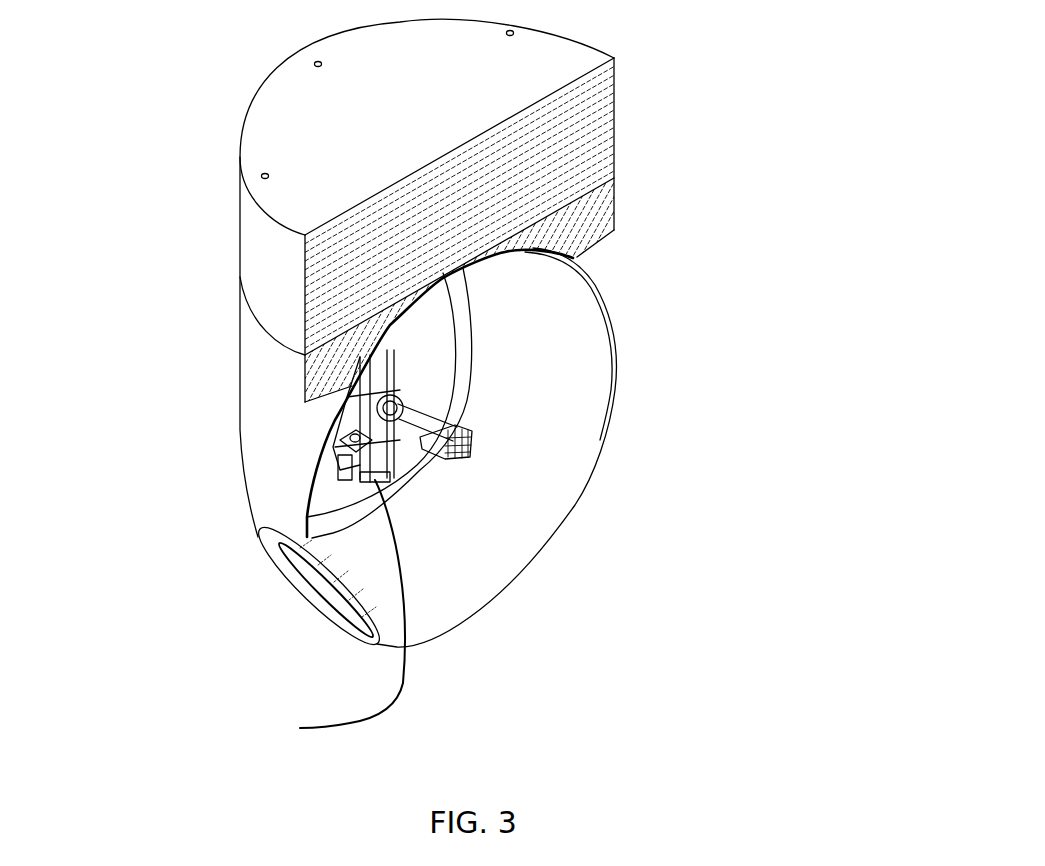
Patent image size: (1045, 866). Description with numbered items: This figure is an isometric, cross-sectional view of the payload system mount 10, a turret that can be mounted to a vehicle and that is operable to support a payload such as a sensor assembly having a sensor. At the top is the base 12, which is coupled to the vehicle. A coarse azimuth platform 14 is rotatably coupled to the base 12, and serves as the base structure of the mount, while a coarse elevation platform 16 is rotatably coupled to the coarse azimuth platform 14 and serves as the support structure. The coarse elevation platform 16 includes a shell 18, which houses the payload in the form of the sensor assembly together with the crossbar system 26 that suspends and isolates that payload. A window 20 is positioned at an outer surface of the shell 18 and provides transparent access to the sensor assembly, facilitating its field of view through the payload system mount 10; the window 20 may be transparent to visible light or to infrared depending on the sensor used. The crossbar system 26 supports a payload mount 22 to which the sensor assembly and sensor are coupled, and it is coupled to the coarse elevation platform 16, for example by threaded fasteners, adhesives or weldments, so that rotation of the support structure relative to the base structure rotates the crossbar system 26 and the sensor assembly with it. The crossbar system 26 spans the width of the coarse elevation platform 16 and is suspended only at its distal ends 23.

The payload system mount 10 is at (696, 175).
The base 12 is at (330, 152).
The coarse azimuth platform 14 is at (277, 345).
The coarse elevation platform 16 is at (293, 492).
The shell 18 is at (497, 563).
The window 20 is at (350, 598).
The payload mount 22 is at (498, 447).
The distal ends 23 is at (300, 728).
The crossbar system 26 is at (448, 382).